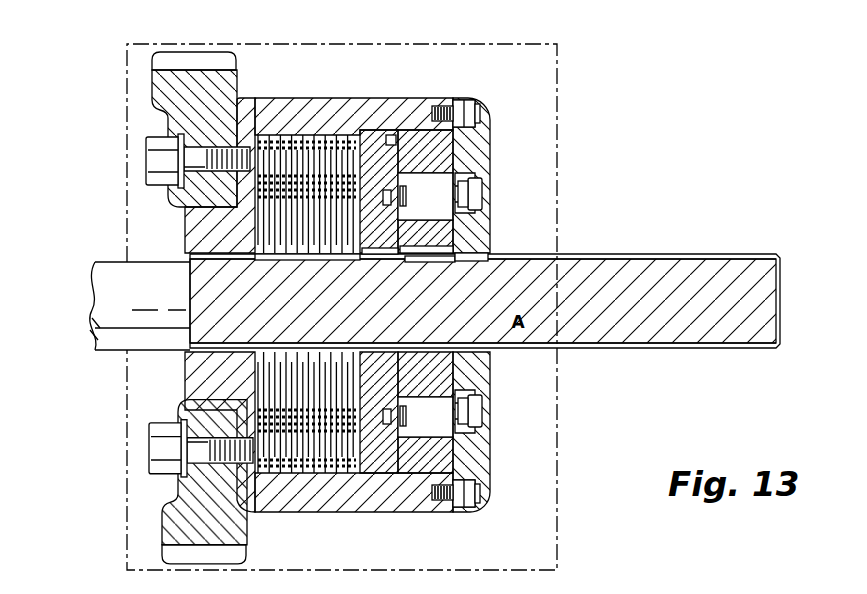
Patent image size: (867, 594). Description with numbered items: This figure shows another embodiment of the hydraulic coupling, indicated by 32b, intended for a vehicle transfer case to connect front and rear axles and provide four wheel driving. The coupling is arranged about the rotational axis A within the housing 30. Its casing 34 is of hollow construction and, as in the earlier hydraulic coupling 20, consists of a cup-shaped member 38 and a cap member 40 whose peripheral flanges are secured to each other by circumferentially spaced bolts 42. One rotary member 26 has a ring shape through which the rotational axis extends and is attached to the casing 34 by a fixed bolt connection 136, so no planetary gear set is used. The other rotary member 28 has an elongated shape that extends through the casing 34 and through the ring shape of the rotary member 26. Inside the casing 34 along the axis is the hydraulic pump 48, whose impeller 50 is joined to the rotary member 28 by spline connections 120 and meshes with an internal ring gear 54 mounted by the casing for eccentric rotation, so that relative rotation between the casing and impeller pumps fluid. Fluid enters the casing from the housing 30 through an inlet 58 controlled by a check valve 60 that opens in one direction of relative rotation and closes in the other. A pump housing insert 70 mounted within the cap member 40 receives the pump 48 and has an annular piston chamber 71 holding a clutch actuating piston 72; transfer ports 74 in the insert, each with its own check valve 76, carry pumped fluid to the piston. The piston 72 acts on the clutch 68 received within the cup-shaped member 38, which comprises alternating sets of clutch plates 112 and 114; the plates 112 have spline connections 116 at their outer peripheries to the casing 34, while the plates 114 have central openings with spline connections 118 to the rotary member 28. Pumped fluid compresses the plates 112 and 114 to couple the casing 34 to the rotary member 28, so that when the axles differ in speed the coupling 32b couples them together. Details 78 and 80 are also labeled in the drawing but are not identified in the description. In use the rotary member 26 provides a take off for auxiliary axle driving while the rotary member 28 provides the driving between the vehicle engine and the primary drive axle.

The hydraulic coupling 20 is at (414, 291).
The rotary member 26 is at (160, 81).
The rotary member 28 is at (678, 273).
The housing 30 is at (560, 137).
The hydraulic coupling 32b is at (165, 382).
The casing 34 is at (345, 100).
The cup-shaped member 38 is at (313, 500).
The cap member 40 is at (450, 156).
The bolts 42 is at (477, 105).
The hydraulic pump 48 is at (470, 450).
The impeller 50 is at (480, 262).
The internal ring gear 54 is at (483, 142).
The inlet 58 is at (482, 186).
The check valve 60 is at (476, 192).
The clutch 68 is at (343, 472).
The pump housing insert 70 is at (390, 130).
The annular piston chamber 71 is at (392, 137).
The clutch actuating piston 72 is at (380, 177).
The transfer ports 74 is at (392, 195).
The check valve 76 is at (390, 198).
The piston lip 78 is at (374, 258).
The piston head lip 80 is at (425, 250).
The clutch plates 112 is at (280, 165).
The clutch plates 114 is at (265, 268).
The spline connections 116 is at (311, 132).
The spline connections 118 is at (305, 270).
The spline connections 120 is at (468, 262).
The fixed bolt connection 136 is at (150, 158).